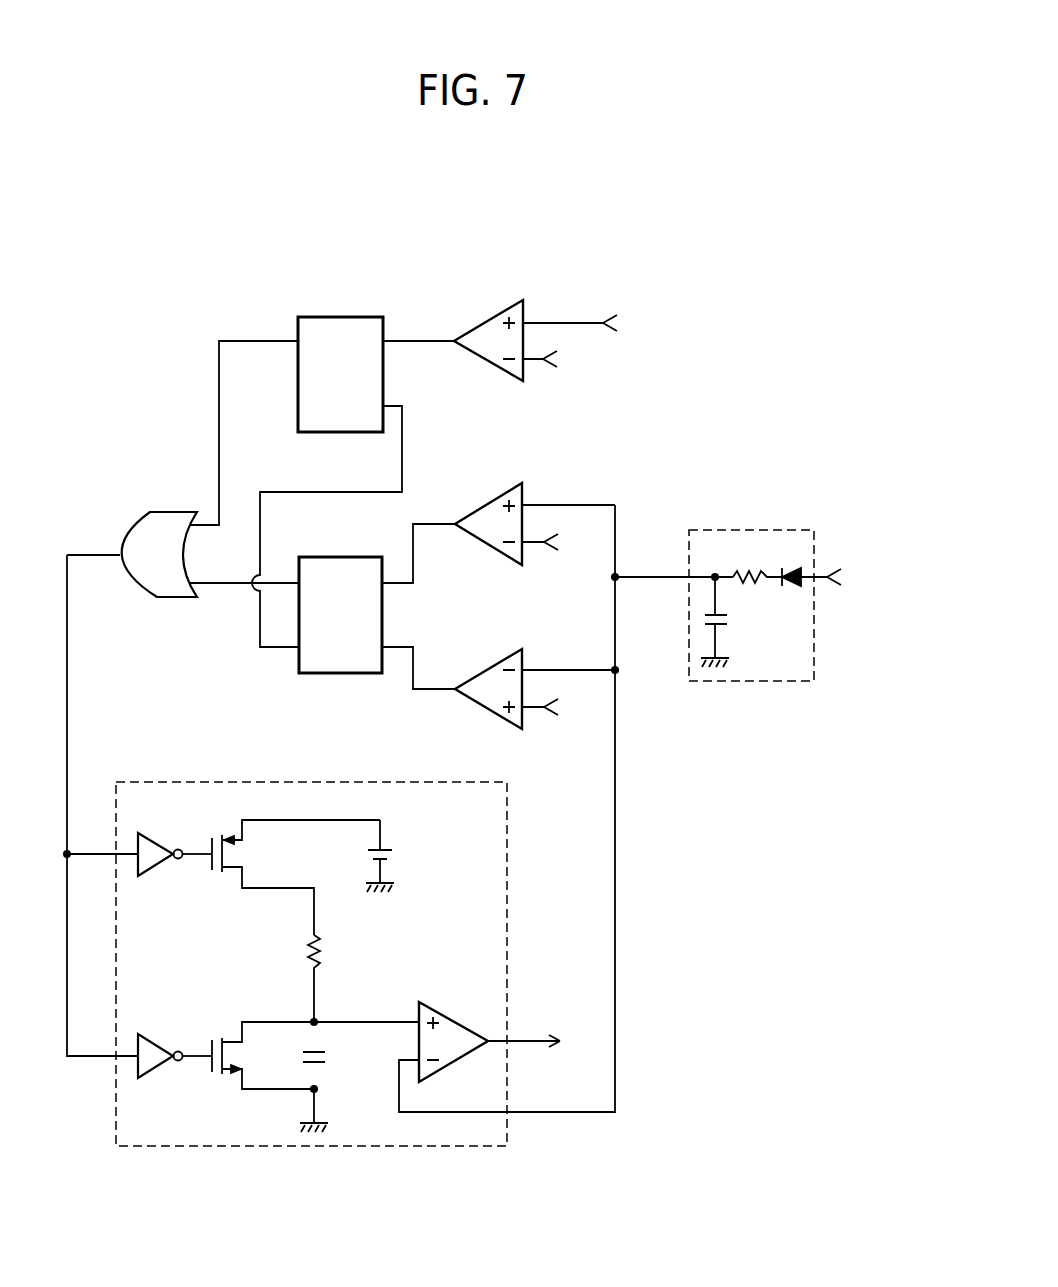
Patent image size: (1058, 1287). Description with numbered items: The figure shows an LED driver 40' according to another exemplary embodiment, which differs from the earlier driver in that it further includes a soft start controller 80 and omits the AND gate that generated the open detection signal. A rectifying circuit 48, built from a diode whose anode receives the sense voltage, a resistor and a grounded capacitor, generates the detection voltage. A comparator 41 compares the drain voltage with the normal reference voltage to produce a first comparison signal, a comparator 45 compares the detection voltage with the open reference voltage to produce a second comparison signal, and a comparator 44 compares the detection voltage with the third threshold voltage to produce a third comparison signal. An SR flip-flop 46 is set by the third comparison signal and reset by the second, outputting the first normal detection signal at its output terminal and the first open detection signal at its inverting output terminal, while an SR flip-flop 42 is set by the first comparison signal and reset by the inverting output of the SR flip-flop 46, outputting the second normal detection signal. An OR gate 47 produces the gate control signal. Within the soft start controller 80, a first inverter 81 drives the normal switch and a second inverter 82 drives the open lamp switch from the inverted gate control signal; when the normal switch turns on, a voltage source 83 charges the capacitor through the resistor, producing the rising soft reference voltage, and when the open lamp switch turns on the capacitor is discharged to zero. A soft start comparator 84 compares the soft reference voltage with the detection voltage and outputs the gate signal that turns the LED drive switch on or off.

The LED driver 40' is at (474, 691).
The comparator 41 is at (497, 315).
The SR flip-flop 42 is at (343, 317).
The comparator 44 is at (492, 501).
The comparator 45 is at (480, 704).
The SR flip-flop 46 is at (343, 557).
The OR gate 47 is at (152, 512).
The rectifying circuit 48 is at (781, 530).
The soft start controller 80 is at (245, 1146).
The first inverter 81 is at (153, 833).
The second inverter 82 is at (153, 1034).
The voltage source 83 is at (398, 852).
The soft start comparator 84 is at (464, 1027).